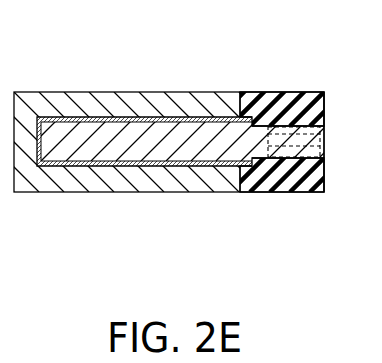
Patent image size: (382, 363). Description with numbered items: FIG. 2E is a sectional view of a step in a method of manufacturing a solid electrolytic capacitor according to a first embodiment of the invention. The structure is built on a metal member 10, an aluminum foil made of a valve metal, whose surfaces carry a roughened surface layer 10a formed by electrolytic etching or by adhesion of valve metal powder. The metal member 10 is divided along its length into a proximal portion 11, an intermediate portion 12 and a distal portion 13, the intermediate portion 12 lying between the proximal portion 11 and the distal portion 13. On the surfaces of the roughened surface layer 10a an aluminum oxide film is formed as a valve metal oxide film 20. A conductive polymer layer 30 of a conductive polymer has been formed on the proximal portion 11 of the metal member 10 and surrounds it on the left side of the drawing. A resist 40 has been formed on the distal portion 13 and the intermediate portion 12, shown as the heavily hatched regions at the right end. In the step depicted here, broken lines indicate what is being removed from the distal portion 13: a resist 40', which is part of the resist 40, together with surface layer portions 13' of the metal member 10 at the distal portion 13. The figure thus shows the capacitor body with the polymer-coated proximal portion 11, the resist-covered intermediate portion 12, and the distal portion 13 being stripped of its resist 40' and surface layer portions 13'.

The metal member 10 is at (355, 263).
The roughened surface layer 10a is at (52, 117).
The proximal portion 11 is at (134, 150).
The intermediate portion 12 is at (247, 163).
The distal portion 13 is at (305, 194).
The surface layer portions 13' is at (343, 128).
The valve metal oxide film 20 is at (89, 118).
The conductive polymer layer 30 is at (131, 104).
The resist 40 is at (290, 100).
The resist 40' is at (290, 77).